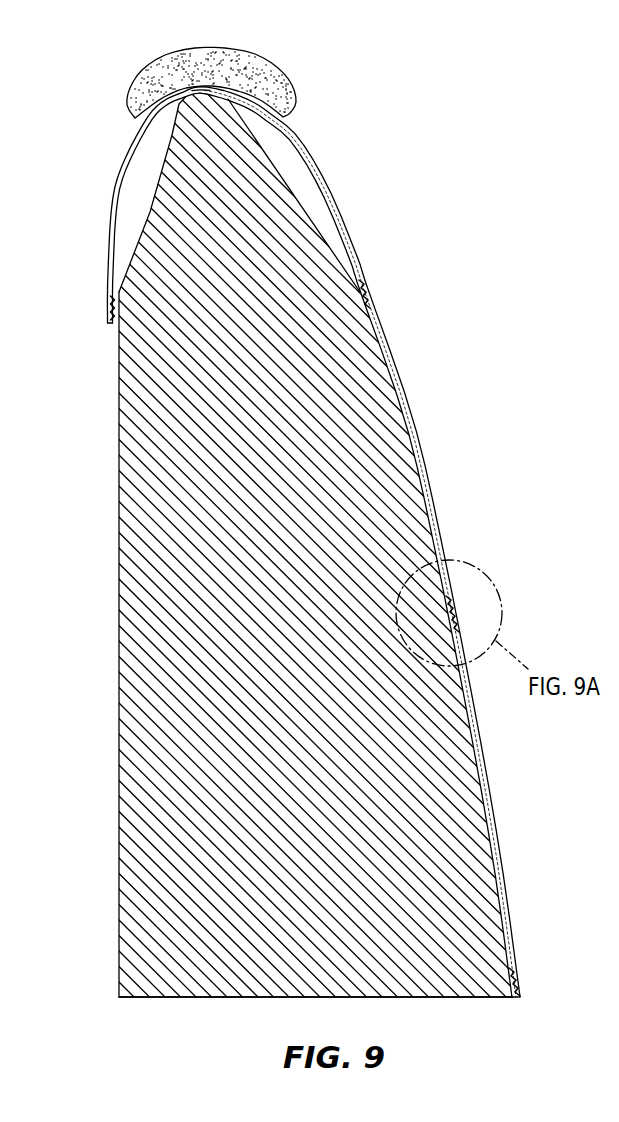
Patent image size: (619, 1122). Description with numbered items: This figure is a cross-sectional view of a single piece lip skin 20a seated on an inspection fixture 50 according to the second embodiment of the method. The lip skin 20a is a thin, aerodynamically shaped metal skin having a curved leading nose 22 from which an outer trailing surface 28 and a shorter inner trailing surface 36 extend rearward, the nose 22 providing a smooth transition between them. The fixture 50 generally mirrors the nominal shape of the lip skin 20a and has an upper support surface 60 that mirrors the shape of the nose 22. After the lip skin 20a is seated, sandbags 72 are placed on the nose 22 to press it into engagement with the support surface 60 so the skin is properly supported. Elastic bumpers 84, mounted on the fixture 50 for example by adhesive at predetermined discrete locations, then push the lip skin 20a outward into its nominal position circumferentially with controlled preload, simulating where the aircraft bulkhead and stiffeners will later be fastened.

The single piece lip skin 20a is at (510, 812).
The curved leading nose 22 is at (176, 108).
The outer trailing surface 28 is at (418, 430).
The inner trailing surface 36 is at (107, 235).
The fixture 50 is at (451, 1008).
The upper support surface 60 is at (208, 104).
The sandbags 72 is at (178, 68).
The elastic bumpers 84 is at (113, 331).